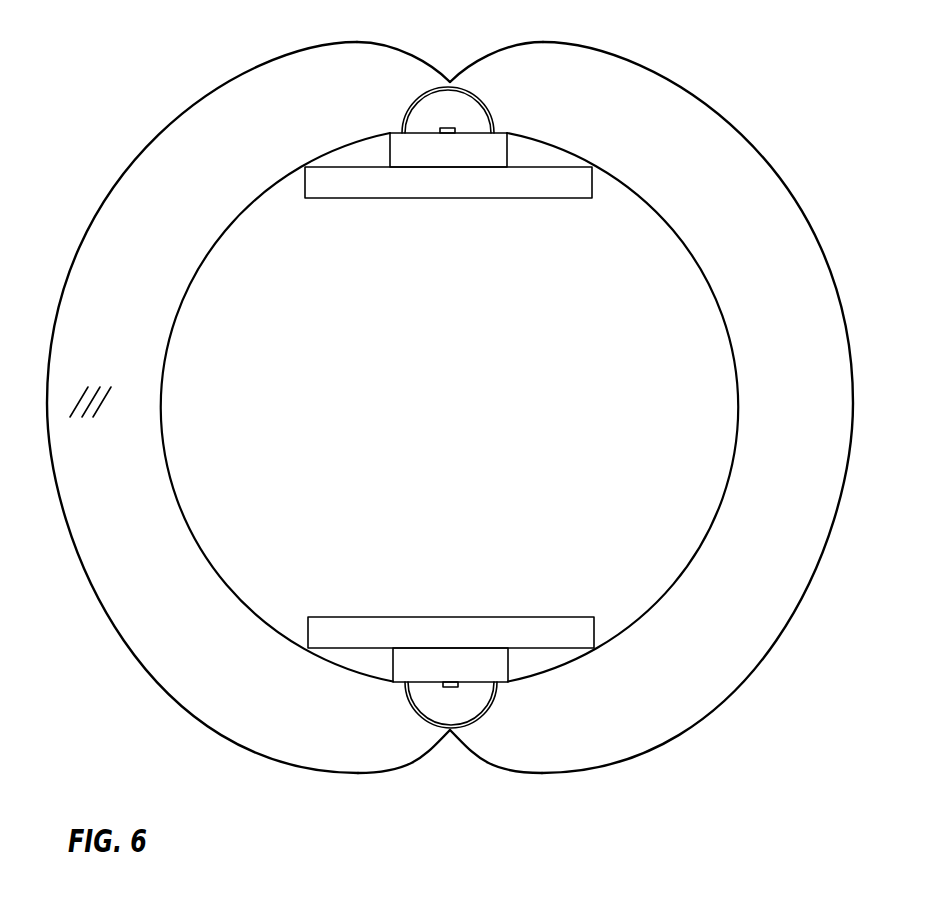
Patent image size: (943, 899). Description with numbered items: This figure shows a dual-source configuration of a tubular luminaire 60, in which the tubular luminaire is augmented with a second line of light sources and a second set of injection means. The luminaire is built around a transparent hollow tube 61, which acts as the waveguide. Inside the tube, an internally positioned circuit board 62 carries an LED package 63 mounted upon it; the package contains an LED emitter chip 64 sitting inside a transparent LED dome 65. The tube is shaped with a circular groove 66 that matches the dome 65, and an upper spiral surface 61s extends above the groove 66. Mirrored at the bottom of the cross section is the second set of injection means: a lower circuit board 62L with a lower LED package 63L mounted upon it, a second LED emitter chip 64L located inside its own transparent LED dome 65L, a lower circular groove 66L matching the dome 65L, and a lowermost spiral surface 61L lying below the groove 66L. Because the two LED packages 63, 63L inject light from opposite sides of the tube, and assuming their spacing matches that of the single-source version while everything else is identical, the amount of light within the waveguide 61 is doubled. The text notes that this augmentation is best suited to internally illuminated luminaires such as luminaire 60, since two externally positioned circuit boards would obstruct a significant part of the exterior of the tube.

The tubular luminaire 60 is at (768, 750).
The transparent hollow tube 61 is at (775, 347).
The upper spiral surface 61s is at (465, 67).
The lowermost spiral surface 61L is at (475, 747).
The circuit board 62 is at (443, 185).
The LED package 63 is at (468, 147).
The LED emitter chip 64 is at (447, 136).
The transparent LED dome 65 is at (453, 113).
The circular groove 66 is at (407, 103).
The lower circuit board 62L is at (448, 632).
The lower LED package 63L is at (482, 657).
The second LED emitter chip 64L is at (448, 678).
The transparent LED dome 65L is at (453, 703).
The lower circular groove 66L is at (403, 695).